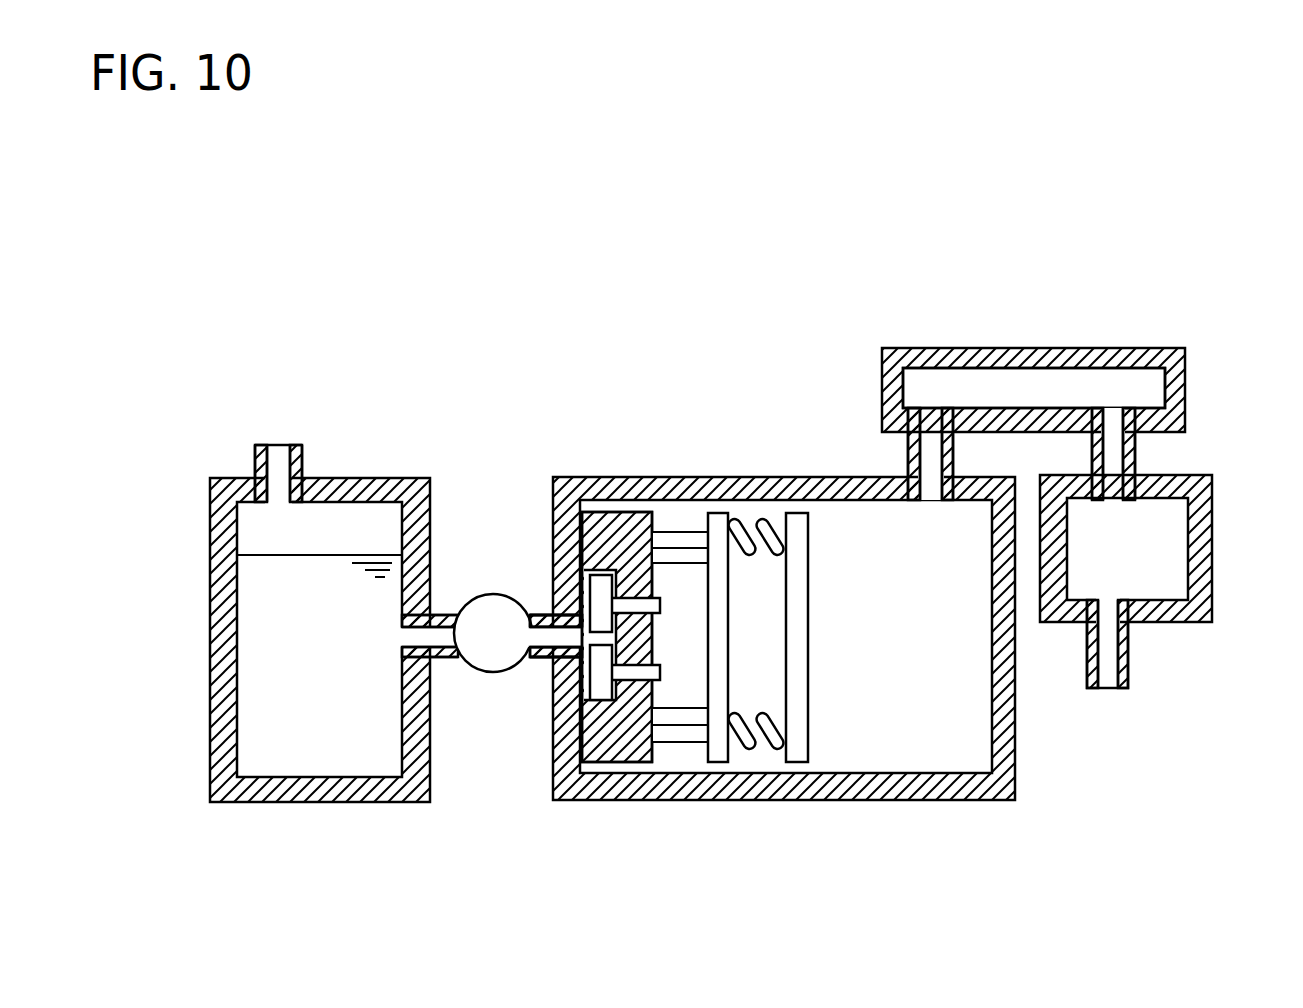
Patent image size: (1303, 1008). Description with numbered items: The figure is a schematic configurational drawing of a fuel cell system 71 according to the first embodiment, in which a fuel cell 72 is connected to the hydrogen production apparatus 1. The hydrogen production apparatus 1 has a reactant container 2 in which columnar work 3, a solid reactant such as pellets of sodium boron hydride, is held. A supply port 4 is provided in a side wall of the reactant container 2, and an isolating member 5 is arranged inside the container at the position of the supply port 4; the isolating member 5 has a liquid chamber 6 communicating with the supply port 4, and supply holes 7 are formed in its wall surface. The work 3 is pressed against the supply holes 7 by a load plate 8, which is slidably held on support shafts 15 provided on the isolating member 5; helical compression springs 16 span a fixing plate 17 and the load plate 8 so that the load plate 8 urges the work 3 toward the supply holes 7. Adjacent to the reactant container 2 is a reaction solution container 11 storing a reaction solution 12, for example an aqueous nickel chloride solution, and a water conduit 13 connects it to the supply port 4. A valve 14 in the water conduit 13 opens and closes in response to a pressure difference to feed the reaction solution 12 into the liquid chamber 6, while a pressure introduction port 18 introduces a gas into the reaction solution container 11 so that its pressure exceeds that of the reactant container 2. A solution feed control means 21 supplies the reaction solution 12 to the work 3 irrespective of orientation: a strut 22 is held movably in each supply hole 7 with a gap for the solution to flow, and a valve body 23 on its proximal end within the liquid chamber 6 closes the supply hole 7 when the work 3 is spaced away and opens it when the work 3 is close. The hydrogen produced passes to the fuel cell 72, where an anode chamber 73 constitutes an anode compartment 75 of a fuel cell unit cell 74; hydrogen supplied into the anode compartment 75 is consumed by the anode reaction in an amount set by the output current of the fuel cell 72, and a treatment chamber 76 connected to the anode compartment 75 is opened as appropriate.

The hydrogen production apparatus 1 is at (749, 589).
The reactant container 2 is at (900, 790).
The columnar work 3 is at (697, 537).
The supply port 4 is at (548, 628).
The isolating member 5 is at (618, 522).
The liquid chamber 6 is at (578, 712).
The supply holes 7 is at (673, 578).
The load plate 8 is at (716, 752).
The reaction solution container 11 is at (337, 795).
The reaction solution 12 is at (257, 703).
The water conduit 13 is at (442, 613).
The valve 14 is at (487, 655).
The support shafts 15 is at (730, 530).
The helical compression springs 16 is at (770, 520).
The fixing plate 17 is at (796, 752).
The pressure introduction port 18 is at (277, 455).
The solution feed control means 21 is at (607, 766).
The strut 22 is at (590, 520).
The valve body 23 is at (580, 575).
The fuel cell system 71 is at (840, 328).
The fuel cell 72 is at (1143, 451).
The anode chamber 73 is at (1180, 388).
The fuel cell unit cell 74 is at (1110, 355).
The anode compartment 75 is at (980, 385).
The treatment chamber 76 is at (1162, 575).